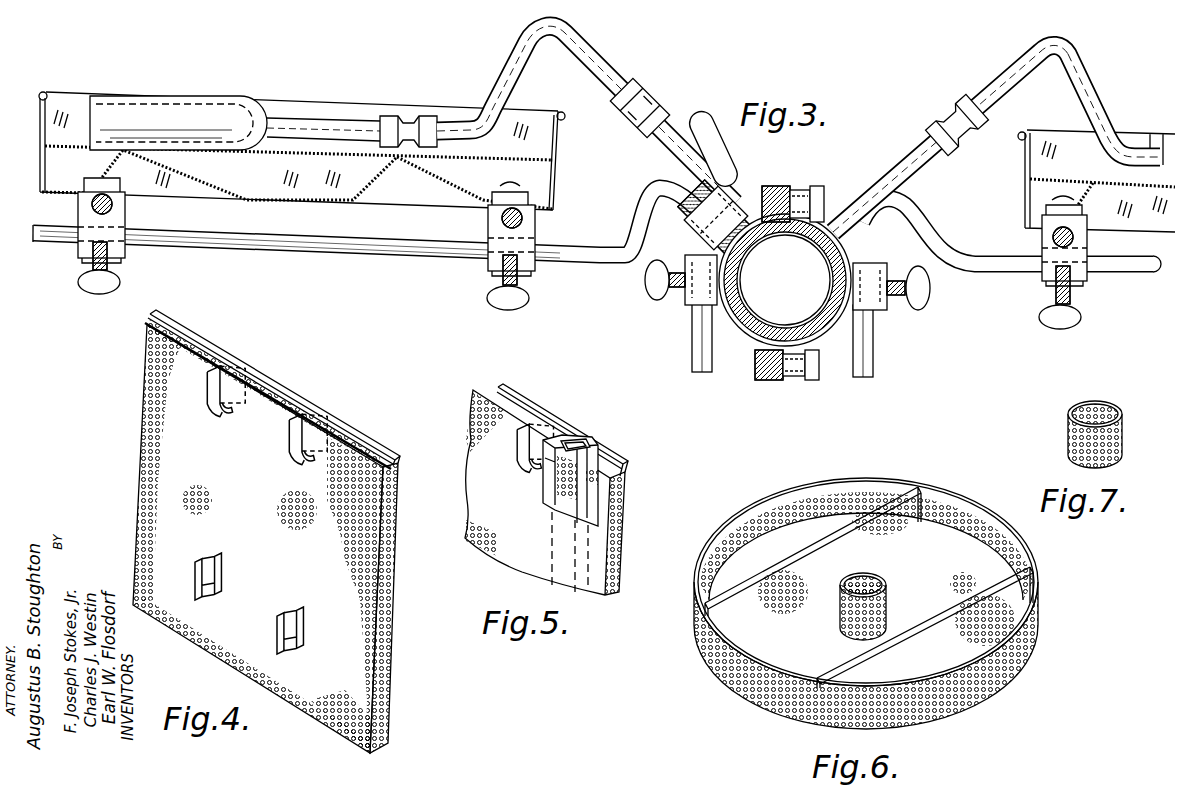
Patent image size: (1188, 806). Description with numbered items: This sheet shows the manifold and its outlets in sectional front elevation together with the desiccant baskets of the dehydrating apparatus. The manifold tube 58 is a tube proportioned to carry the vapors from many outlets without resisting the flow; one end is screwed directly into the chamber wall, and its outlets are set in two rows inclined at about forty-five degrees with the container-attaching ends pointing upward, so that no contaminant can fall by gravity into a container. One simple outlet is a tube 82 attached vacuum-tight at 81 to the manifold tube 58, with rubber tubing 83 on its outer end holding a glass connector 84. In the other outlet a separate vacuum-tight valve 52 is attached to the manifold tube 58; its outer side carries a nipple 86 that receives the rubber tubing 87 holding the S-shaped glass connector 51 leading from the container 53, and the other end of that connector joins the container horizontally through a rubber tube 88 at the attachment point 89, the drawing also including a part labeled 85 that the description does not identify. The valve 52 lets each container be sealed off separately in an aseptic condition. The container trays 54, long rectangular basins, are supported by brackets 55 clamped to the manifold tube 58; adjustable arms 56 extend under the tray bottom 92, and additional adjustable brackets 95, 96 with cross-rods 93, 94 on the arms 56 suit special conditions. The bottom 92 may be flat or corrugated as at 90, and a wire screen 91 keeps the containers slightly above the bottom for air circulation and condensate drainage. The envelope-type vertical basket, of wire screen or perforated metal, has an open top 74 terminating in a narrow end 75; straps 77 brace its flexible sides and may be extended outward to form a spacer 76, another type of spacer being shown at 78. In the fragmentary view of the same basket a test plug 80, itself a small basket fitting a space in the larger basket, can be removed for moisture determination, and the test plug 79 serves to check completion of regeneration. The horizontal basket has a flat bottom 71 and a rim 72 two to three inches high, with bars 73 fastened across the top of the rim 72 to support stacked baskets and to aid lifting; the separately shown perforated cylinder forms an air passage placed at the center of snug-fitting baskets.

In FIG. 3, the glass connector 51 is at (503, 63).
In FIG. 3, the vacuum-tight valve 52 is at (738, 200).
In FIG. 3, the container 53 is at (158, 106).
In FIG. 3, the container tray 54 is at (560, 176).
In FIG. 3, the bracket 55 is at (786, 316).
In FIG. 3, the adjustable arm 56 is at (580, 263).
In FIG. 3, the manifold tube 58 is at (818, 332).
In FIG. 6, the flat bottom 71 is at (770, 642).
In FIG. 6, the rim 72 is at (783, 693).
In FIG. 6, the bar 73 is at (703, 627).
In FIG. 4, the open top 74 is at (267, 377).
In FIG. 5, the open top 74 is at (622, 462).
In FIG. 4, the narrow end 75 is at (383, 683).
In FIG. 5, the narrow end 75 is at (628, 505).
In FIG. 4, the spacer 76 is at (293, 440).
In FIG. 4, the strap 77 is at (333, 450).
In FIG. 4, the spacer 78 is at (217, 558).
In FIG. 5, the test plug 79 is at (588, 442).
In FIG. 5, the test plug 80 is at (578, 442).
In FIG. 3, the vacuum-tight attachment 81 is at (828, 258).
In FIG. 3, the outlet tube 82 is at (898, 166).
In FIG. 3, the rubber tubing 83 is at (953, 111).
In FIG. 3, the glass connector 84 is at (1097, 95).
In FIG. 3, the handle 85 is at (703, 114).
In FIG. 3, the nipple 86 is at (663, 128).
In FIG. 3, the rubber tubing 87 is at (641, 100).
In FIG. 3, the rubber tube 88 is at (411, 117).
In FIG. 3, the attachment point 89 is at (333, 118).
In FIG. 3, the corrugated bottom 90 is at (385, 175).
In FIG. 3, the wire screen 91 is at (333, 160).
In FIG. 3, the tray bottom 92 is at (360, 202).
In FIG. 3, the cross-rod 93 is at (523, 220).
In FIG. 3, the cross-rod 94 is at (113, 205).
In FIG. 3, the adjustable bracket 95 is at (488, 264).
In FIG. 3, the adjustable bracket 96 is at (118, 255).